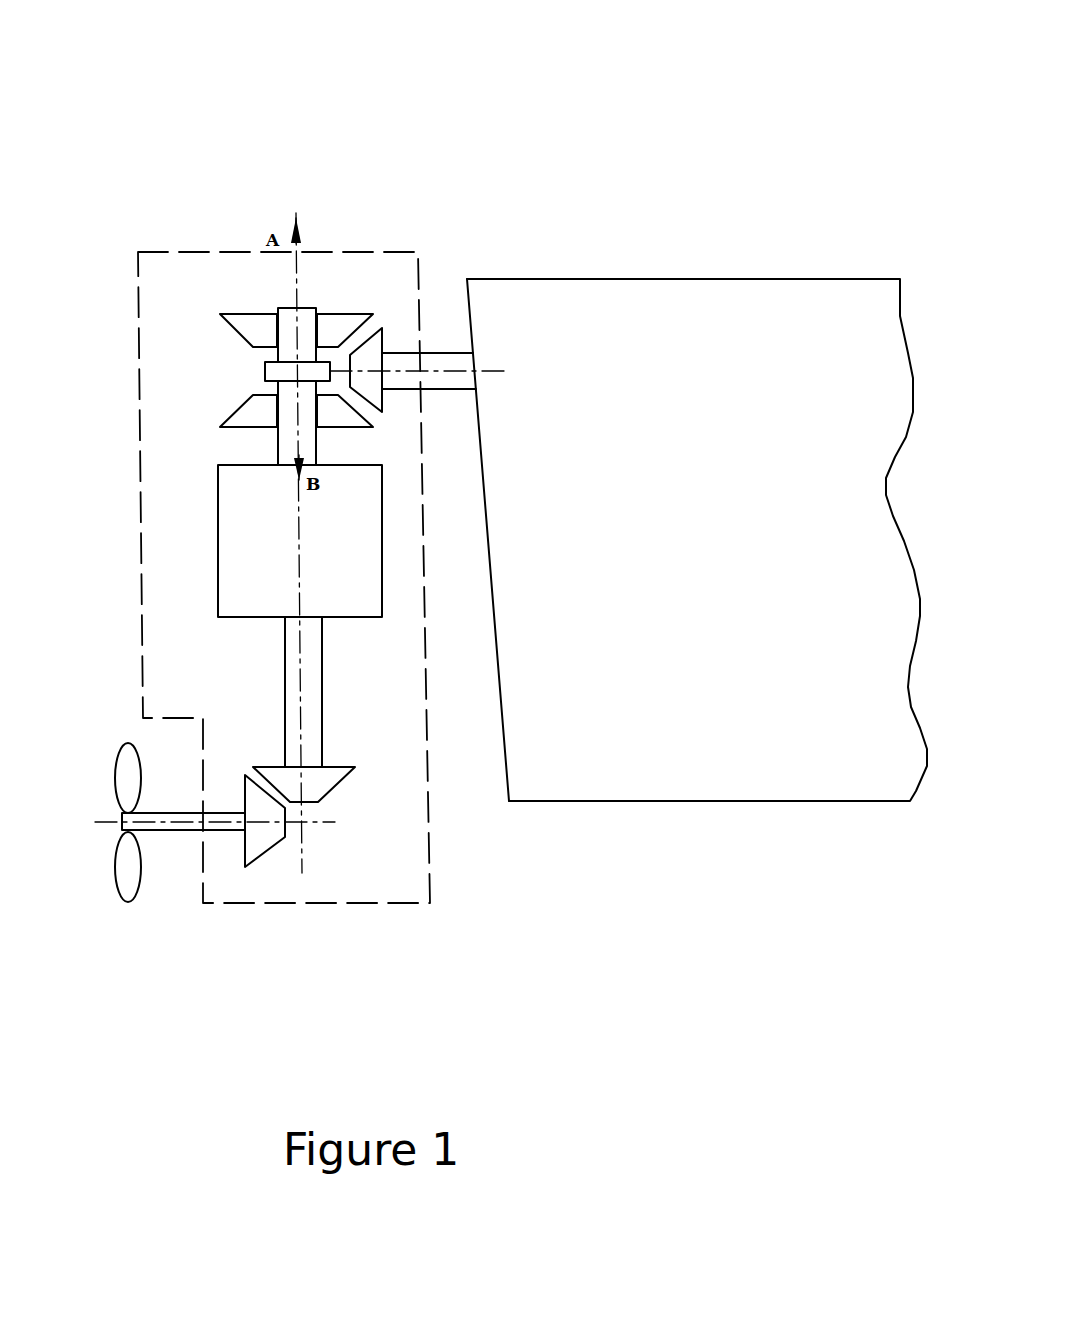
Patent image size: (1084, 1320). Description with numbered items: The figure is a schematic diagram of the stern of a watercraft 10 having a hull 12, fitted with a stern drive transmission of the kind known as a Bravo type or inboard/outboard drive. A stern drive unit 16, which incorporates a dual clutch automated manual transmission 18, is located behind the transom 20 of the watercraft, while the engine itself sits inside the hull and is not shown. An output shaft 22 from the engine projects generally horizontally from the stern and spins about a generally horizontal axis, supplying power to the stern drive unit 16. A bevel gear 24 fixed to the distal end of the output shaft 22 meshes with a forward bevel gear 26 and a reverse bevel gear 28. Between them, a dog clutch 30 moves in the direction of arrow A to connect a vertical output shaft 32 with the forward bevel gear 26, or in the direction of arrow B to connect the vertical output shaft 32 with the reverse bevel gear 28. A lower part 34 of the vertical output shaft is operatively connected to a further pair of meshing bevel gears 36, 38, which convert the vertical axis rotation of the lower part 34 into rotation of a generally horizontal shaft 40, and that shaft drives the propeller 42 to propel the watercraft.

The watercraft 10 is at (700, 175).
The hull 12 is at (697, 540).
The stern drive unit 16 is at (252, 526).
The dual clutch automated manual transmission 18 is at (300, 541).
The transom 20 is at (484, 467).
The output shaft 22 is at (461, 254).
The bevel gear 24 is at (303, 266).
The forward bevel gear 26 is at (235, 330).
The reverse bevel gear 28 is at (235, 412).
The dog clutch 30 is at (262, 371).
The vertical output shaft 32 is at (280, 445).
The lower part of the vertical output shaft 34 is at (285, 685).
The bevel gear 36 is at (318, 803).
The bevel gear 38 is at (267, 830).
The horizontal shaft 40 is at (185, 832).
The propeller 42 is at (130, 905).